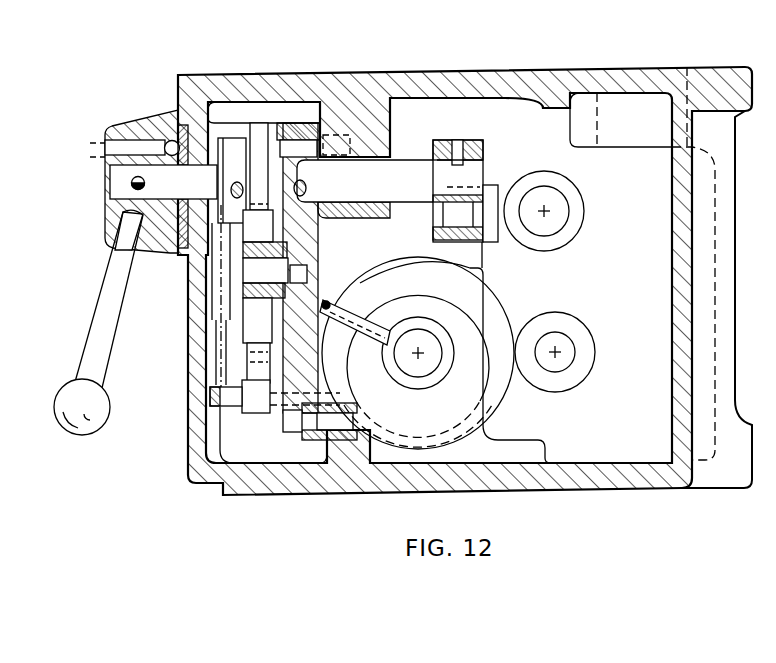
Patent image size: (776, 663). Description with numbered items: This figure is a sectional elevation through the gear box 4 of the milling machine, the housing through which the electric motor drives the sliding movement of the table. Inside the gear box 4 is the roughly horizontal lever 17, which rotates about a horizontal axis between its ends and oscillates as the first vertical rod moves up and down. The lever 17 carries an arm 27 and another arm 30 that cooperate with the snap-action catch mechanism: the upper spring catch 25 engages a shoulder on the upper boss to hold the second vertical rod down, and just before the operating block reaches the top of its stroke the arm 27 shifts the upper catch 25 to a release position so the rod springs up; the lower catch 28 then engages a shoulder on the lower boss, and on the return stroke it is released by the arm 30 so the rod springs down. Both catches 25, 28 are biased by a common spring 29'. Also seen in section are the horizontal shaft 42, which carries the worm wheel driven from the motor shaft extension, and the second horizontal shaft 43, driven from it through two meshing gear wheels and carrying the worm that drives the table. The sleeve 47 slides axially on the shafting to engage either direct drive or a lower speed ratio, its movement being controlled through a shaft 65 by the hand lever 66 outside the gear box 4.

The gear box 4 is at (293, 75).
The lever 17 is at (255, 276).
The upper spring catch 25 is at (257, 190).
The arm 27 is at (258, 225).
The lower catch 28 is at (255, 365).
The common spring 29' is at (190, 297).
The arm 30 is at (255, 333).
The horizontal shaft 42 is at (567, 345).
The second horizontal shaft 43 is at (553, 197).
The sleeve 47 is at (570, 228).
The shaft 65 is at (382, 191).
The hand lever 66 is at (97, 363).